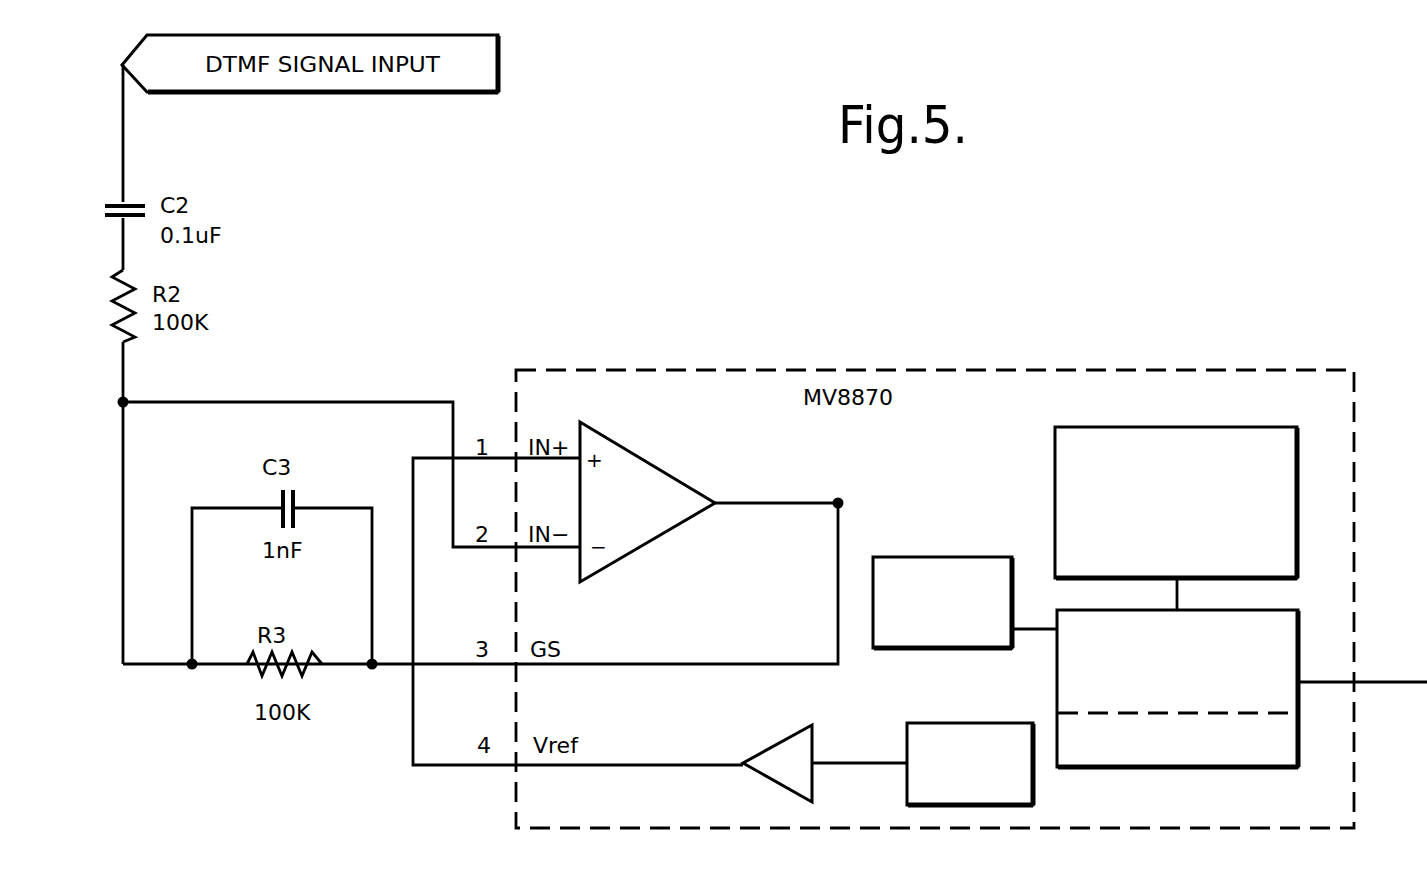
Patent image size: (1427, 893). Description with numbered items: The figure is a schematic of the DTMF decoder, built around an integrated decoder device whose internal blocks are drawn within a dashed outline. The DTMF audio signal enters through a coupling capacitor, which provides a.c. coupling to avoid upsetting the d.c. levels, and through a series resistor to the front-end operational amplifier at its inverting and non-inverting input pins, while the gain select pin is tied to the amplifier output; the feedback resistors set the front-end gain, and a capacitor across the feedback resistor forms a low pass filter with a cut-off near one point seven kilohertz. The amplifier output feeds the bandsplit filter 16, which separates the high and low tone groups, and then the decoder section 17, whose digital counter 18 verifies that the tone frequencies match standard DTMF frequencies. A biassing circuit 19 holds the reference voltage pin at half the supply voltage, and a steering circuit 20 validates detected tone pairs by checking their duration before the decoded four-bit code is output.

The bandsplit filter 16 is at (1273, 432).
The decoder section 17 is at (1288, 637).
The digital counter 18 is at (1278, 757).
The biassing circuit 19 is at (1012, 800).
The steering circuit 20 is at (885, 640).